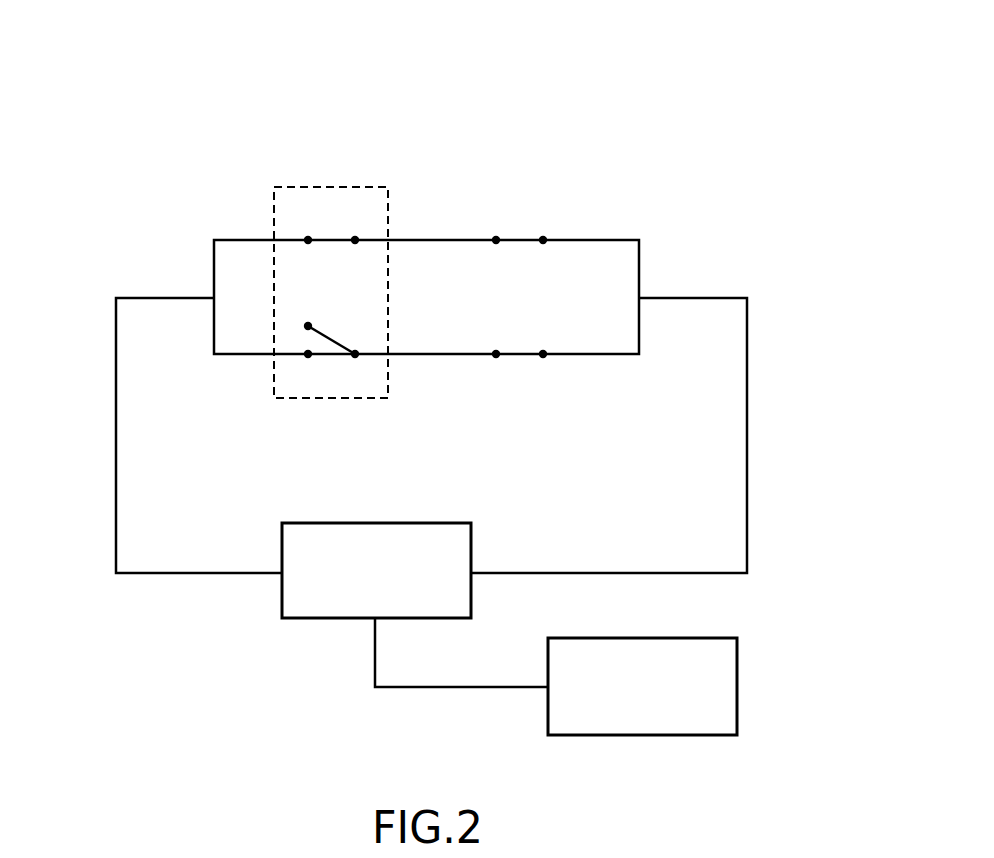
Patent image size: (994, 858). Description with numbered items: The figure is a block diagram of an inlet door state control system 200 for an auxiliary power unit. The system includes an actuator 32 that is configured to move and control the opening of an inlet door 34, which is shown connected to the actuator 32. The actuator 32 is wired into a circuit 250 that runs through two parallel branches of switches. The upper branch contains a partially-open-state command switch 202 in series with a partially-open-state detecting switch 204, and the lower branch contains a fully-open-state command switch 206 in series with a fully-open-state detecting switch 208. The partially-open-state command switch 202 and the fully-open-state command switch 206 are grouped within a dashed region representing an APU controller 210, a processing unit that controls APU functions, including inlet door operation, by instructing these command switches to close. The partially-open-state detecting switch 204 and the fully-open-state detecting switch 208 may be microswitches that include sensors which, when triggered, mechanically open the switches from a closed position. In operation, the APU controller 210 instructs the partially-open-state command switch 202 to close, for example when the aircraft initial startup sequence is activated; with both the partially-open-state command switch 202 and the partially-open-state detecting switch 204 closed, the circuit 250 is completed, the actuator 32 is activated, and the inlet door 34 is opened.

The inlet door state control system 200 is at (704, 105).
The partially-open-state command switch 202 is at (342, 224).
The partially-open-state detecting switch 204 is at (527, 224).
The fully-open-state command switch 206 is at (316, 378).
The fully-open-state detecting switch 208 is at (523, 374).
The APU controller 210 is at (274, 207).
The circuit 250 is at (116, 465).
The actuator 32 is at (303, 618).
The inlet door 34 is at (713, 735).